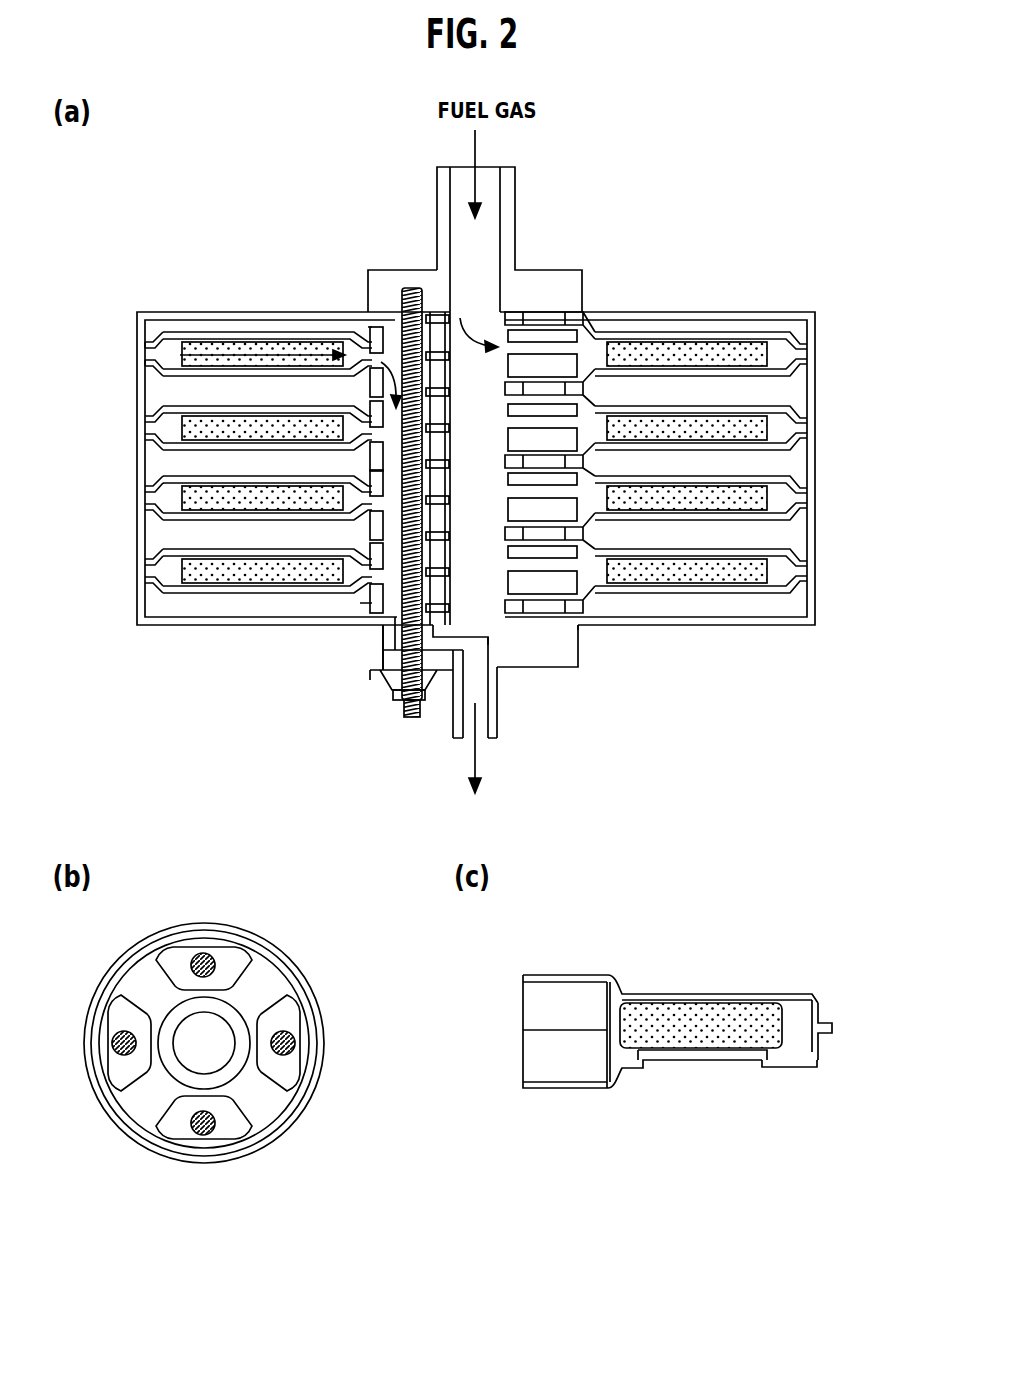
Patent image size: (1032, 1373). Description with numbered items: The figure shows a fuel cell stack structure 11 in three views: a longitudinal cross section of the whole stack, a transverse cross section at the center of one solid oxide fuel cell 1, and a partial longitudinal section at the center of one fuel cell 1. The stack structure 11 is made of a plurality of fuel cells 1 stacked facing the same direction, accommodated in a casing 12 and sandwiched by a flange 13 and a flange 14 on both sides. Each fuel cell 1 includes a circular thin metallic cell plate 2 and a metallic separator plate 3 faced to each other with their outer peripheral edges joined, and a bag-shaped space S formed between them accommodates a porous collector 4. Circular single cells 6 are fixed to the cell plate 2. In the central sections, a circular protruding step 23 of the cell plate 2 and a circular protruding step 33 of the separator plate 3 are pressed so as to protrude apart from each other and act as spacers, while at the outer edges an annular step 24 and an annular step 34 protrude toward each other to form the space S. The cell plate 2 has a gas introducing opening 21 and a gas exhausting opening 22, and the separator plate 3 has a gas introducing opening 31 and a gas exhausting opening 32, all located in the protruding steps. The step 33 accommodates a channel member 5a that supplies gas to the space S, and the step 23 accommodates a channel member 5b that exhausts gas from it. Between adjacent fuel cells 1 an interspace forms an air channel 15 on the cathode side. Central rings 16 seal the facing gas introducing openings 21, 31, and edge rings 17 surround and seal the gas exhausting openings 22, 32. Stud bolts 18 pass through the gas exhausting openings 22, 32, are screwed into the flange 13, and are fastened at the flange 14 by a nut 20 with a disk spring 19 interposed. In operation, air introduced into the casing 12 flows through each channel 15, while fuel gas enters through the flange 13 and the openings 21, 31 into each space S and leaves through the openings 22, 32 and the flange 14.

The solid oxide fuel cell 1 is at (806, 327).
The cell plate 2 is at (790, 376).
The separator plate 3 is at (778, 333).
The collector 4 is at (630, 347).
The channel member 5a is at (533, 1004).
The channel member 5b is at (533, 1059).
The single cell 6 is at (738, 596).
The stack structure 11 is at (632, 158).
The casing 12 is at (208, 627).
The flange 13 is at (440, 185).
The flange 14 is at (567, 660).
The air channel 15 is at (305, 540).
The central ring 16 is at (437, 312).
The edge ring 17 is at (574, 605).
The stud bolt 18 is at (410, 718).
The disk spring 19 is at (437, 692).
The nut 20 is at (405, 692).
The gas introducing opening 21 is at (497, 605).
The gas exhausting opening 22 is at (397, 605).
The circular protruding step 23 is at (365, 604).
The annular step 24 is at (150, 366).
The gas introducing opening 31 is at (498, 330).
The gas exhausting opening 32 is at (395, 318).
The circular protruding step 33 is at (372, 330).
The annular step 34 is at (150, 342).
The space S is at (800, 458).